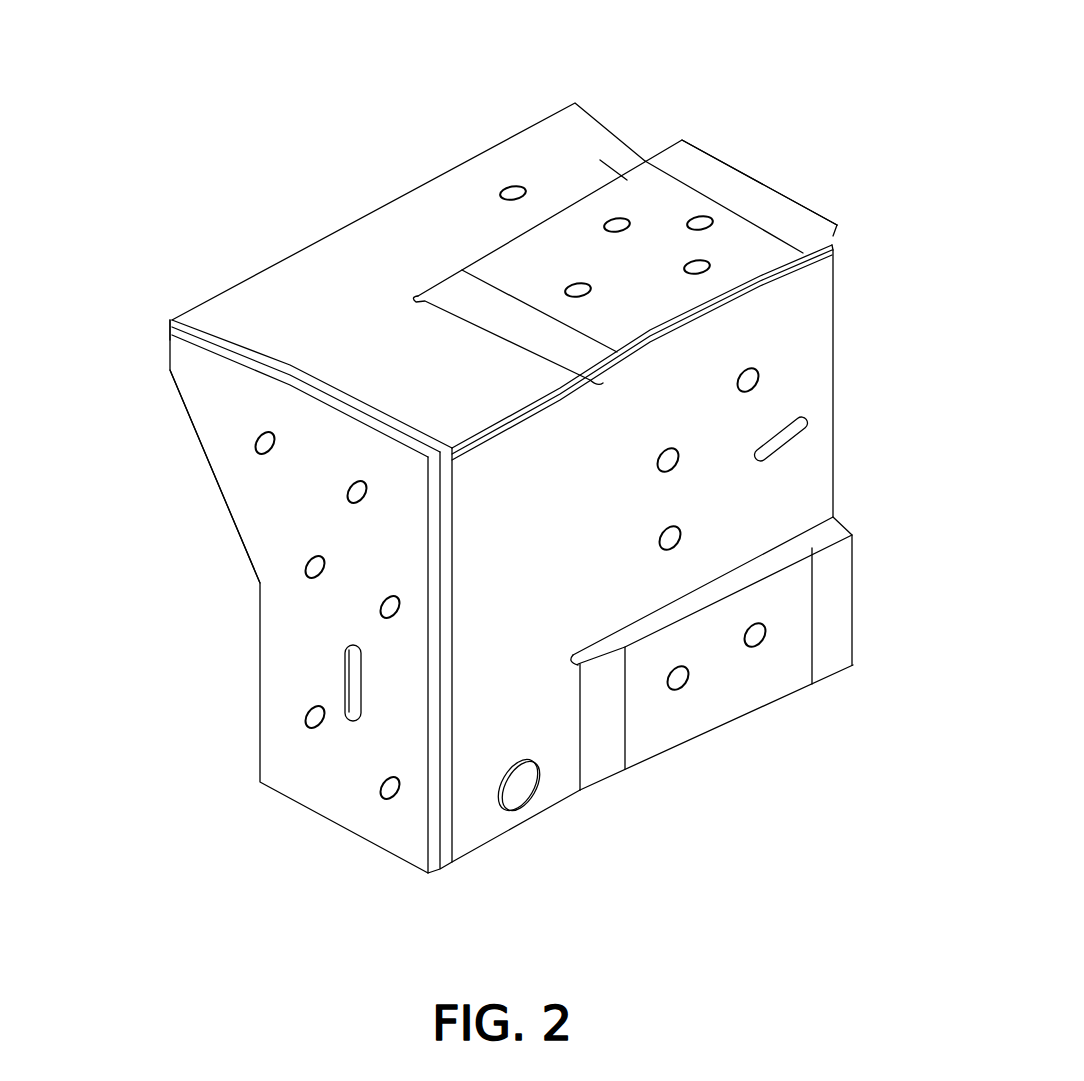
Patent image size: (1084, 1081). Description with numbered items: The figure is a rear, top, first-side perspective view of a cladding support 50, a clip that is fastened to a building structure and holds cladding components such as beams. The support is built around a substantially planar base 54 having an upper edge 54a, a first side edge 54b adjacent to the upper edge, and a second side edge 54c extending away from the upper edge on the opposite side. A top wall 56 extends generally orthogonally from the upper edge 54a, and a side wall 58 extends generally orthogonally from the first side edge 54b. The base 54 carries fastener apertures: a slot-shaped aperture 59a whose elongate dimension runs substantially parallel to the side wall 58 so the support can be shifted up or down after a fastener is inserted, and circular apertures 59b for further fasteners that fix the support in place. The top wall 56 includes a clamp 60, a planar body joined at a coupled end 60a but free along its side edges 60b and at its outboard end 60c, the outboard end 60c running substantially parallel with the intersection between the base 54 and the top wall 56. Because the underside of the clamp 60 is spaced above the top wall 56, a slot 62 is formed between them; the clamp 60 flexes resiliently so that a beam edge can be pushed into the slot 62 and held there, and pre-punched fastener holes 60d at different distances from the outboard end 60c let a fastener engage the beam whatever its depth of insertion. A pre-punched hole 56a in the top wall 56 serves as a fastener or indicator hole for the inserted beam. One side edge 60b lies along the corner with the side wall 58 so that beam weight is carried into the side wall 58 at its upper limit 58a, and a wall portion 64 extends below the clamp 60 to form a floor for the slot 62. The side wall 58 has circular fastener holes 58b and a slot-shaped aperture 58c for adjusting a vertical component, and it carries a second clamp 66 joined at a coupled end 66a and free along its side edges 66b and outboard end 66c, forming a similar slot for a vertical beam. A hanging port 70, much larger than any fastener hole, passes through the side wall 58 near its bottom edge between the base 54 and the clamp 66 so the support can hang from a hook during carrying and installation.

The cladding support 50 is at (131, 194).
The base 54 is at (313, 762).
The upper edge 54a is at (170, 330).
The first side edge 54b is at (452, 815).
The second side edge 54c is at (225, 505).
The top wall 56 is at (300, 307).
The pre-punched hole 56a is at (503, 188).
The side wall 58 is at (478, 820).
The upper limit of side wall 58a is at (678, 340).
The circular aperture 58b is at (758, 381).
The slot-shaped aperture 58c is at (778, 440).
The slot-shaped aperture 59a is at (356, 680).
The circular aperture 59b is at (307, 568).
The clamp 60 is at (727, 245).
The coupled end 60a is at (445, 280).
The side edges 60b is at (697, 303).
The outboard end 60c is at (783, 184).
The pre-punched fastener holes 60d is at (617, 218).
The slot 62 is at (453, 290).
The wall portion 64 is at (833, 256).
The clamp 66 is at (757, 685).
The coupled end 66a is at (603, 765).
The side edges 66b is at (650, 633).
The outboard end 66c is at (853, 665).
The hanging port 70 is at (522, 787).